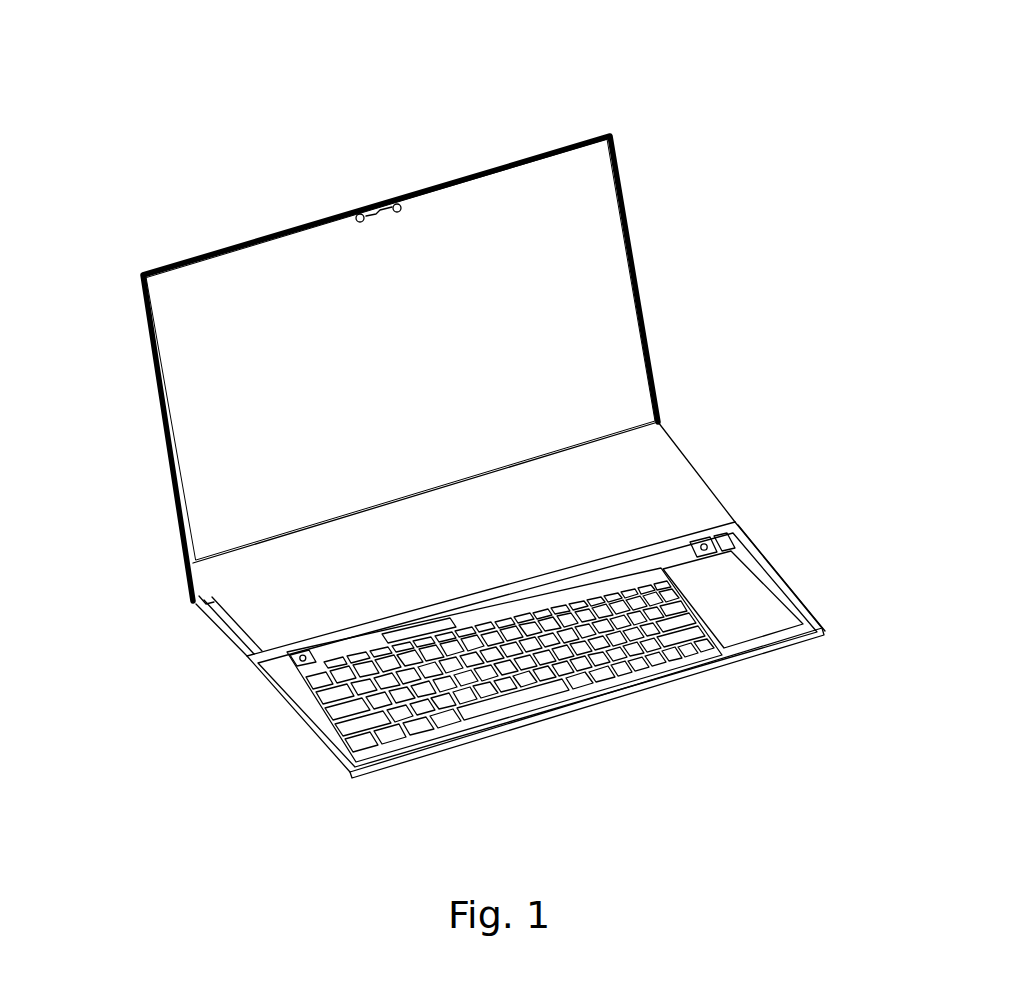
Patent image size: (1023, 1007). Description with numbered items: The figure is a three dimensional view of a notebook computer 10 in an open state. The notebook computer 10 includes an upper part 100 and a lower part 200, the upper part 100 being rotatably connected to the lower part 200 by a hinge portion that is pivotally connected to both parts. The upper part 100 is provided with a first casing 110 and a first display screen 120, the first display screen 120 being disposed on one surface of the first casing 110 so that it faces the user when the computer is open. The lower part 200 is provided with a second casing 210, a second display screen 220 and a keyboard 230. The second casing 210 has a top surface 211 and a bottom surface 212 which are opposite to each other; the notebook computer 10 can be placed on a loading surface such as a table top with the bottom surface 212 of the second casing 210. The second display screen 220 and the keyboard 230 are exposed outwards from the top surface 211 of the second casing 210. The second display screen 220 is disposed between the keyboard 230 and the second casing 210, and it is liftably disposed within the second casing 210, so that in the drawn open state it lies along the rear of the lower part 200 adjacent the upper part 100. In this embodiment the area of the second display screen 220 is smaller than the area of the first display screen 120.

The notebook computer 10 is at (981, 58).
The upper part 100 is at (491, 368).
The first casing 110 is at (628, 222).
The first display screen 120 is at (617, 303).
The lower part 200 is at (588, 597).
The second casing 210 is at (551, 634).
The top surface 211 is at (304, 698).
The bottom surface 212 is at (317, 741).
The second display screen 220 is at (692, 492).
The keyboard 230 is at (700, 621).